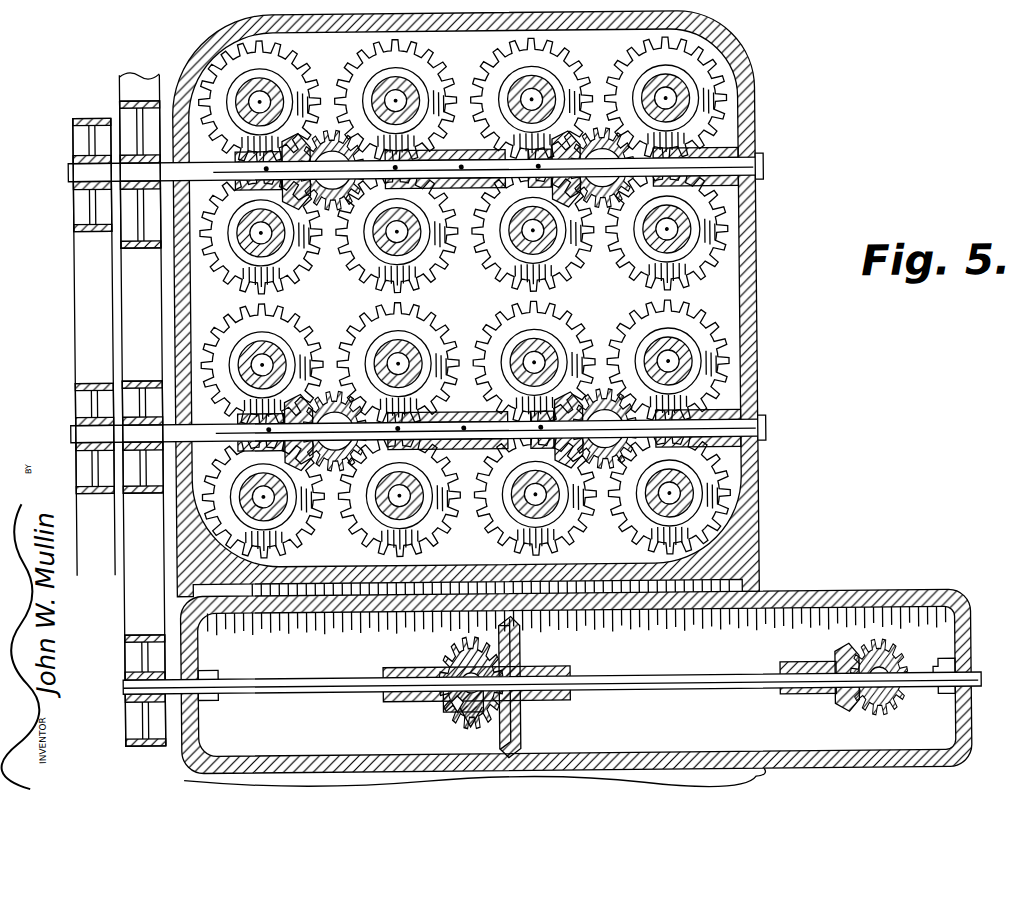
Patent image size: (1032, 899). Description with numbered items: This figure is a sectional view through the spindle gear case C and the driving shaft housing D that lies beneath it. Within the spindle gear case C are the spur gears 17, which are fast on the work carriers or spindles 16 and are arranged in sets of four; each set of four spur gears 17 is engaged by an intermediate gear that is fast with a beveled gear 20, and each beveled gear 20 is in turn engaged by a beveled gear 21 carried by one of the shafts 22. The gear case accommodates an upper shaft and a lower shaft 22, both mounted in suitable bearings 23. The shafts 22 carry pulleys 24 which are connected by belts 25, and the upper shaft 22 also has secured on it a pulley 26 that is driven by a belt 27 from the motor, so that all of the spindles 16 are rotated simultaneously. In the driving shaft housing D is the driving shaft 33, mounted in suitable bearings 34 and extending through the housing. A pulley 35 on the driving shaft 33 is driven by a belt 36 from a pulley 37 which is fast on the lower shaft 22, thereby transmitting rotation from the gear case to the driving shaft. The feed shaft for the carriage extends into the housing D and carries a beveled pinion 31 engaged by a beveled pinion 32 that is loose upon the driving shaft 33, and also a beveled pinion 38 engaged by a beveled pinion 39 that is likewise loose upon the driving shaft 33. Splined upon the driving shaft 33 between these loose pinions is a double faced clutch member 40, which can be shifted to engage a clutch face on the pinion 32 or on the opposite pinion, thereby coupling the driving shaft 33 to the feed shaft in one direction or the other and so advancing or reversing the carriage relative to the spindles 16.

The work carriers or spindles 16 is at (292, 258).
The spur gears 17 is at (572, 72).
The beveled gears 20 is at (357, 76).
The beveled gears 21 is at (206, 372).
The shafts 22 is at (765, 163).
The bearings 23 is at (188, 96).
The pulleys 24 is at (75, 214).
The belts 25 is at (75, 322).
The pulley 26 is at (146, 247).
The belt 27 is at (122, 78).
The beveled pinion 31 is at (452, 652).
The beveled pinion 32 is at (518, 660).
The driving shaft 33 is at (681, 680).
The bearings 34 is at (798, 665).
The pulley 35 is at (136, 631).
The belt 36 is at (122, 580).
The pulley 37 is at (153, 492).
The beveled pinion 38 is at (470, 724).
The beveled pinion 39 is at (440, 702).
The double faced clutch member 40 is at (450, 710).
The spindle gear case C is at (473, 303).
The driving shaft housing D is at (892, 594).